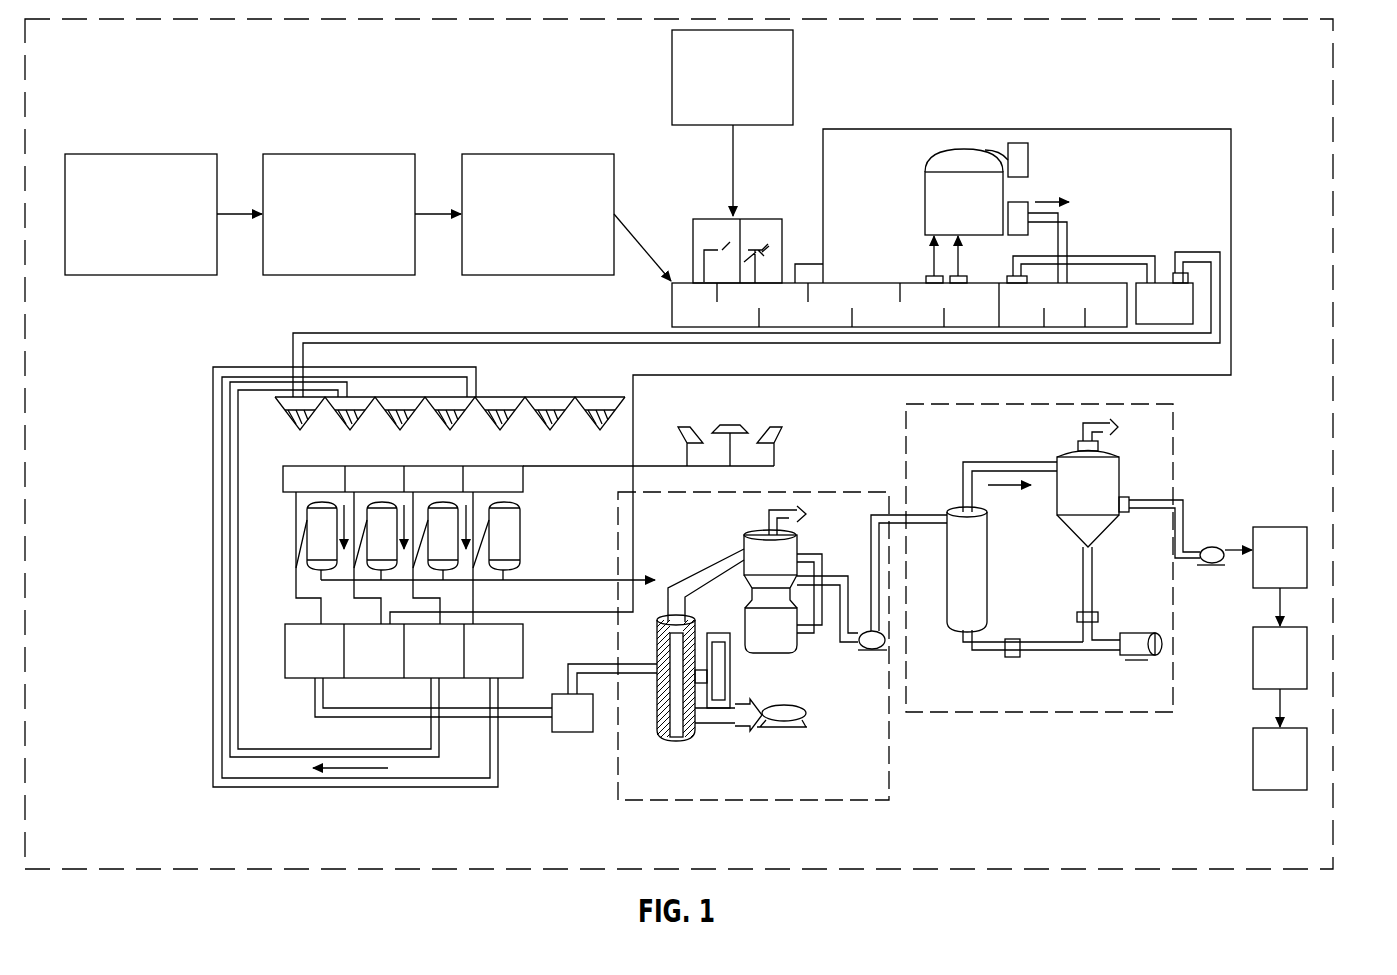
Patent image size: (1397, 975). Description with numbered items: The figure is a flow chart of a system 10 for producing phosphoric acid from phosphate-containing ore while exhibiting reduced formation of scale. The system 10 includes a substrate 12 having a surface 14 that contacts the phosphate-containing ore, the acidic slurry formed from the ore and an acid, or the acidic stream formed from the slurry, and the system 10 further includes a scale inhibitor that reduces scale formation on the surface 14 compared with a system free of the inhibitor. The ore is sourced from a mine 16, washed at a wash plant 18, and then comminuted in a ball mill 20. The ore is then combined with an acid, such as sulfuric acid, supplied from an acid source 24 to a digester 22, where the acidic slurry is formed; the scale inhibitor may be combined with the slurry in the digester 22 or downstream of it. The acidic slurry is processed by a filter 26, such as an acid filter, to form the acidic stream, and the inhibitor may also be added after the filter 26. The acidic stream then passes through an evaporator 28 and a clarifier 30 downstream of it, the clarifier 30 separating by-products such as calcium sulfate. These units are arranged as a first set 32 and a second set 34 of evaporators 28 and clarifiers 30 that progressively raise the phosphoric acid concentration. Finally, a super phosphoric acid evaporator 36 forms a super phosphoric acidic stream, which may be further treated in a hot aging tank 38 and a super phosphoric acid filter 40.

The system 10 is at (1333, 67).
The substrate 12 is at (675, 745).
The surface 14 is at (686, 616).
The mine 16 is at (160, 229).
The wash plant 18 is at (358, 229).
The ball mill 20 is at (557, 229).
The digester 22 is at (983, 218).
The acid source 24 is at (752, 88).
The filter 26 is at (287, 612).
The evaporator 28 is at (696, 732).
The clarifier 30 is at (771, 655).
The first set 32 is at (803, 800).
The second set 34 is at (1047, 712).
The super phosphoric acid evaporator 36 is at (1300, 572).
The hot aging tank 38 is at (1300, 673).
The super phosphoric acid filter 40 is at (1300, 774).